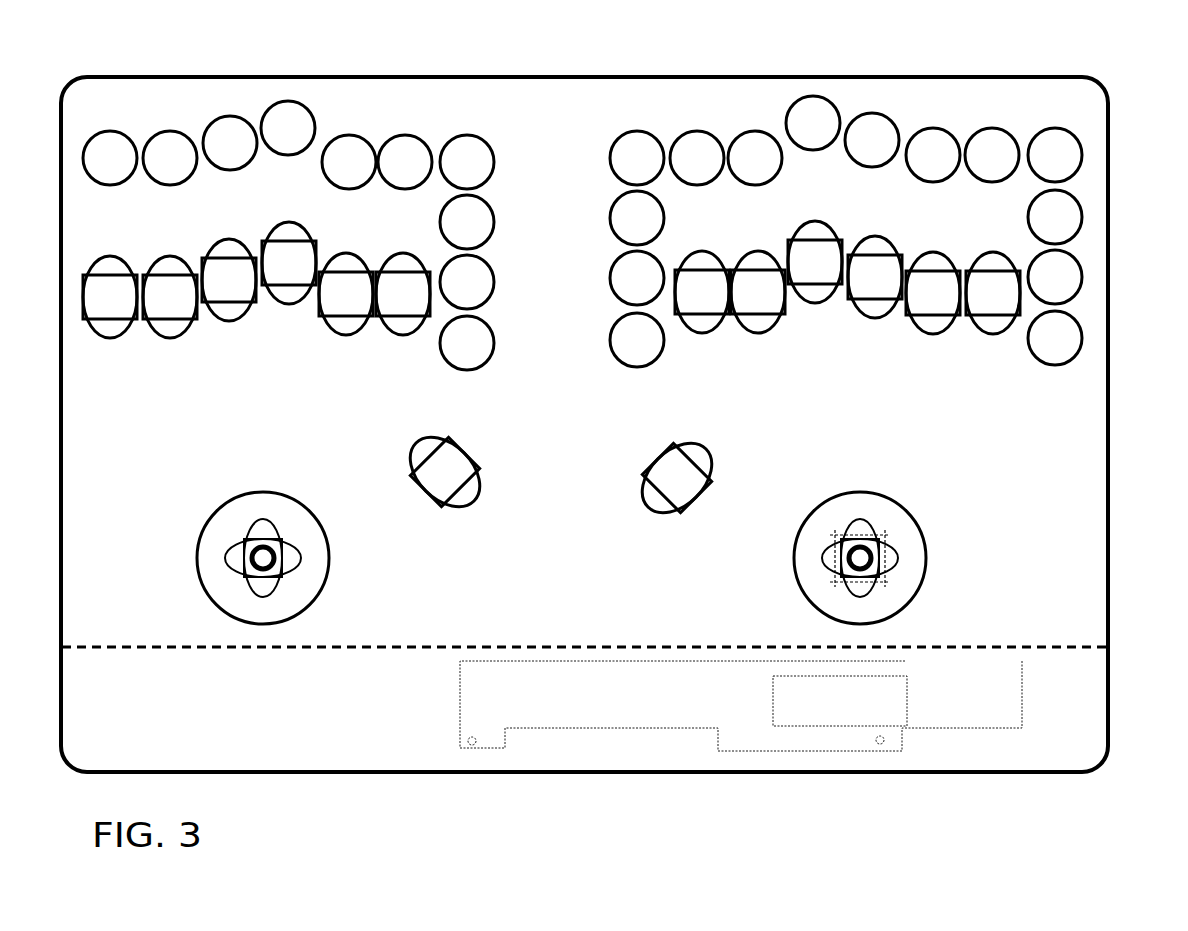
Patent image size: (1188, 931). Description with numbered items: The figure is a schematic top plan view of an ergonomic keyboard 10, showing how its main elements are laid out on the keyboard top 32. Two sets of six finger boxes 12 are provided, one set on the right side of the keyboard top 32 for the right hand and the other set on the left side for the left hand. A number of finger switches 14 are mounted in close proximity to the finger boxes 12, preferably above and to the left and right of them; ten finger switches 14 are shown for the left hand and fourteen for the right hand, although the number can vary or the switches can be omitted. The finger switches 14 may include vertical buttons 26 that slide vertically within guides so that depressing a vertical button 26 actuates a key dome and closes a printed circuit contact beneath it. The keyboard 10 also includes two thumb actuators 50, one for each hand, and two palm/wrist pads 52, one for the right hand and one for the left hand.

The ergonomic keyboard 10 is at (123, 62).
The finger boxes 12 is at (987, 332).
The finger switches 14 is at (873, 120).
The vertical buttons 26 is at (741, 706).
The keyboard top 32 is at (1108, 437).
The thumb actuators 50 is at (668, 463).
The palm/wrist pads 52 is at (226, 527).